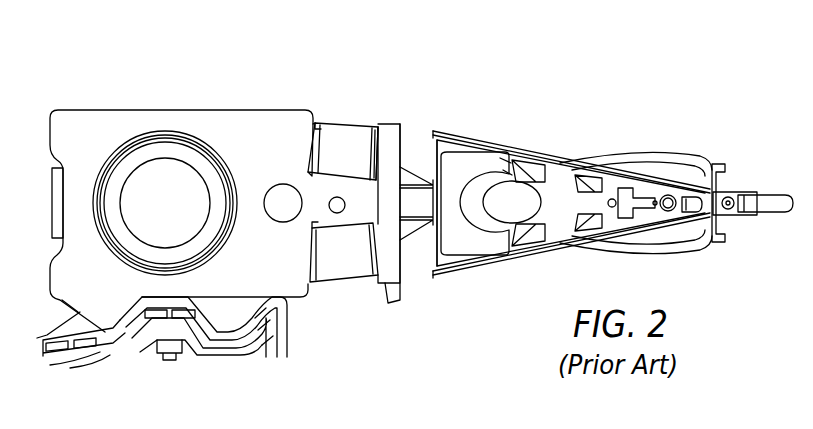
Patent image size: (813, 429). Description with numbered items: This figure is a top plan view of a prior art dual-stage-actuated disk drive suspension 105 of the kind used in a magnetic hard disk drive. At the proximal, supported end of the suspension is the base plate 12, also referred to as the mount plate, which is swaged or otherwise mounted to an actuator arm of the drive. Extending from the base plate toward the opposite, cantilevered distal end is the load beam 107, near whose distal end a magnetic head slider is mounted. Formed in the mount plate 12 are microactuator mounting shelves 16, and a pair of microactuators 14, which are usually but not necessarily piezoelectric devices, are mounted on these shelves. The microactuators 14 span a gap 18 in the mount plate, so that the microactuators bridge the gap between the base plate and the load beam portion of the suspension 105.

The base plate 12 is at (120, 318).
The microactuators 14 is at (337, 137).
The microactuator mounting shelves 16 is at (315, 122).
The gap 18 is at (367, 180).
The disk drive suspension 105 is at (423, 100).
The load beam 107 is at (503, 150).